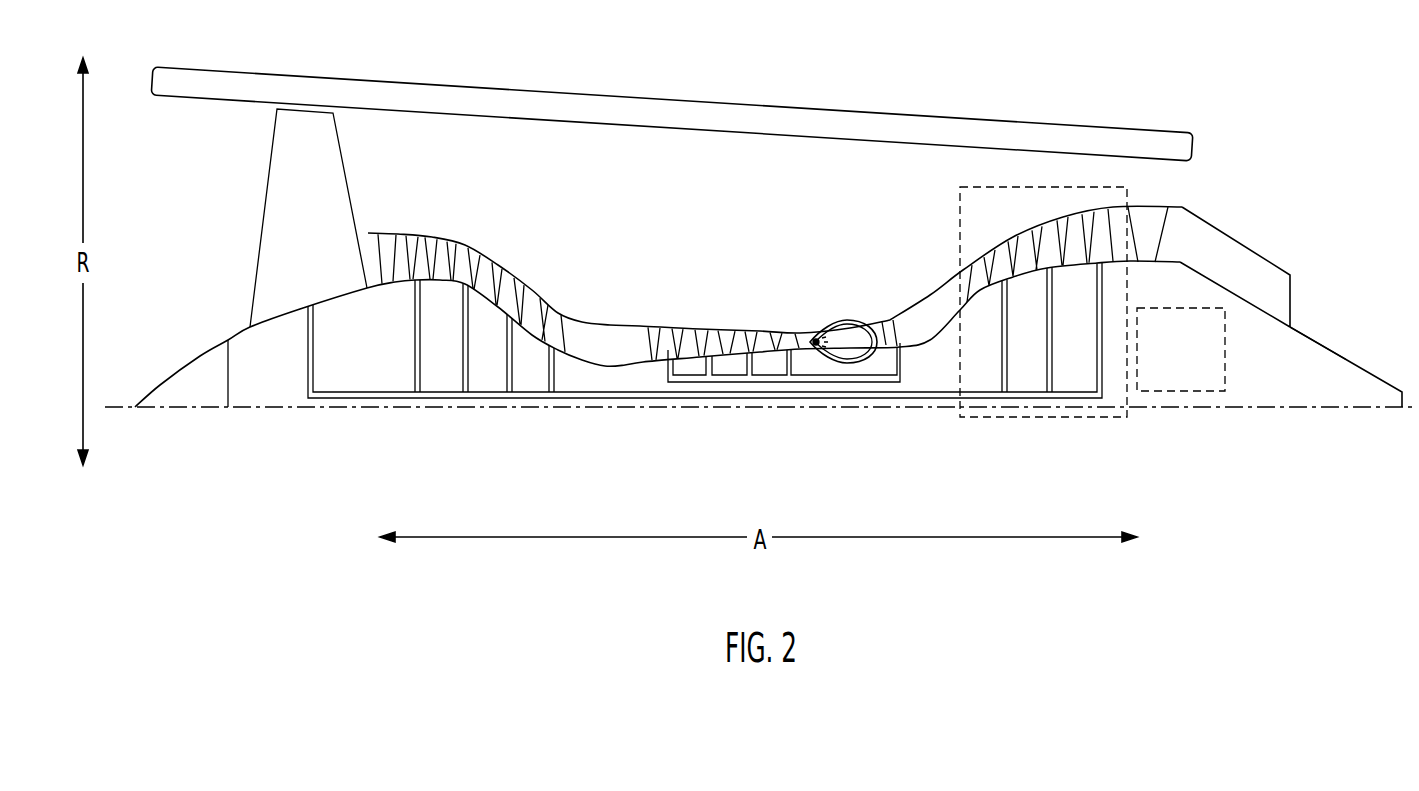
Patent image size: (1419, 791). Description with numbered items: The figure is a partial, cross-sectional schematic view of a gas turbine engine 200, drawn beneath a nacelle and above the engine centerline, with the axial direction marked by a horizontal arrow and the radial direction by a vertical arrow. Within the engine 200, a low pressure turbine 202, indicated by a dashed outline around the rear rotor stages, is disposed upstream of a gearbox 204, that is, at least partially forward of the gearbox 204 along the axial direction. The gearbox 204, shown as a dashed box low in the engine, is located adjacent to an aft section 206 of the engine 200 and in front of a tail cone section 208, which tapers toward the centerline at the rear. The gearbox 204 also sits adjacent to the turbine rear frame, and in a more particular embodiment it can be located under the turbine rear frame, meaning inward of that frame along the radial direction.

The gas turbine engine 200 is at (1299, 137).
The low pressure turbine 202 is at (960, 236).
The gearbox 204 is at (1212, 394).
The aft section 206 is at (1324, 318).
The tail cone section 208 is at (1288, 360).